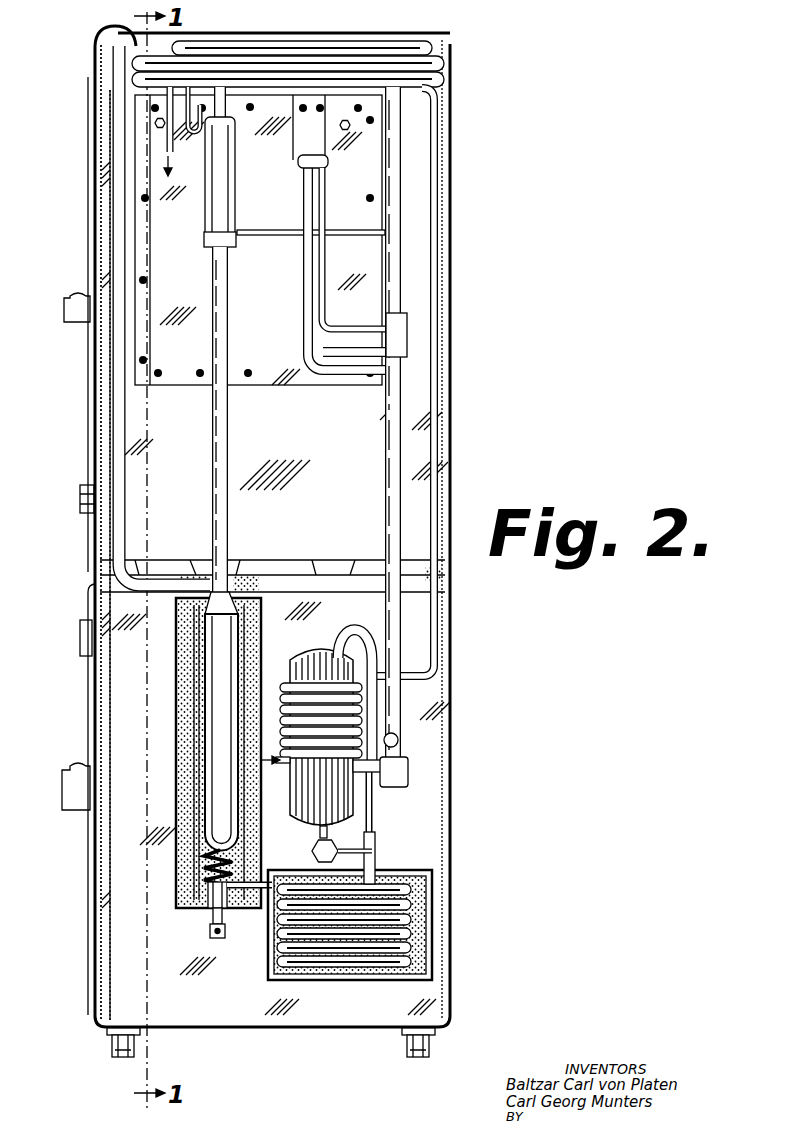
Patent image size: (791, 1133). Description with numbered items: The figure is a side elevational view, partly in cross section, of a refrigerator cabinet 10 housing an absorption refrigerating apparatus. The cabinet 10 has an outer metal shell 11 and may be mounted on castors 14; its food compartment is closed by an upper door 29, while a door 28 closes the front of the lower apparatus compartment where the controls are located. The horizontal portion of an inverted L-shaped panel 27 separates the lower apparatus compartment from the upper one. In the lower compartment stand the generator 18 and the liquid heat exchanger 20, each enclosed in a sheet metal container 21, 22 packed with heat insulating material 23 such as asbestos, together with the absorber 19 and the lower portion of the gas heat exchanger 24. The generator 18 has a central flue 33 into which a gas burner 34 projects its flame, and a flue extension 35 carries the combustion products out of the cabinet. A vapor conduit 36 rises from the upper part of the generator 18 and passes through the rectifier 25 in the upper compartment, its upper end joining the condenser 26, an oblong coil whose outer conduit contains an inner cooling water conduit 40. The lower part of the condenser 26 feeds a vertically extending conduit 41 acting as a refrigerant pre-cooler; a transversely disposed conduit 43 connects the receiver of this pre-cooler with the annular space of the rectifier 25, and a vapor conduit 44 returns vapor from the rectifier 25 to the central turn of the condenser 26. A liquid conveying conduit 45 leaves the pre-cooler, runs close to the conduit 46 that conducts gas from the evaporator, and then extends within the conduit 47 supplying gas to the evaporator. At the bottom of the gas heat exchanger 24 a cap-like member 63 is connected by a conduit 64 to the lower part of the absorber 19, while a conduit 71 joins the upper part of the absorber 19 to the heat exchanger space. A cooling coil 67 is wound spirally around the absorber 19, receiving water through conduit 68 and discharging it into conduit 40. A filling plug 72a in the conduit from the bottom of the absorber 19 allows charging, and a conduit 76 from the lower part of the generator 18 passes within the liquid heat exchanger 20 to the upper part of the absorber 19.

The refrigerator cabinet 10 is at (96, 236).
The outer metal shell 11 is at (97, 362).
The castors 14 is at (142, 1047).
The generator 18 is at (207, 712).
The absorber 19 is at (306, 654).
The liquid heat exchanger 20 is at (400, 892).
The sheet metal container 21 is at (180, 785).
The sheet metal container 22 is at (270, 950).
The heat insulating material 23 is at (186, 850).
The gas heat exchanger 24 is at (390, 516).
The rectifier 25 is at (207, 222).
The condenser 26 is at (443, 73).
The inverted L-shaped panel 27 is at (144, 580).
The door 28 is at (88, 690).
The upper door 29 is at (98, 170).
The flue 33 is at (208, 920).
The gas burner 34 is at (212, 940).
The flue extension 35 is at (165, 593).
The vapor conduit 36 is at (226, 452).
The inner cooling water conduit 40 is at (165, 133).
The vertically extending conduit 41 is at (400, 195).
The transversely disposed conduit 43 is at (258, 231).
The vapor conduit 44 is at (182, 136).
The liquid conveying conduit 45 is at (323, 312).
The conduit 46 is at (352, 342).
The conduit 47 is at (307, 272).
The cap-like member 63 is at (403, 786).
The conduit 64 is at (373, 790).
The cooling coil 67 is at (290, 697).
The conduit 68 is at (278, 766).
The conduit 71 is at (357, 632).
The filling plug 72a is at (311, 850).
The conduit 76 is at (378, 700).